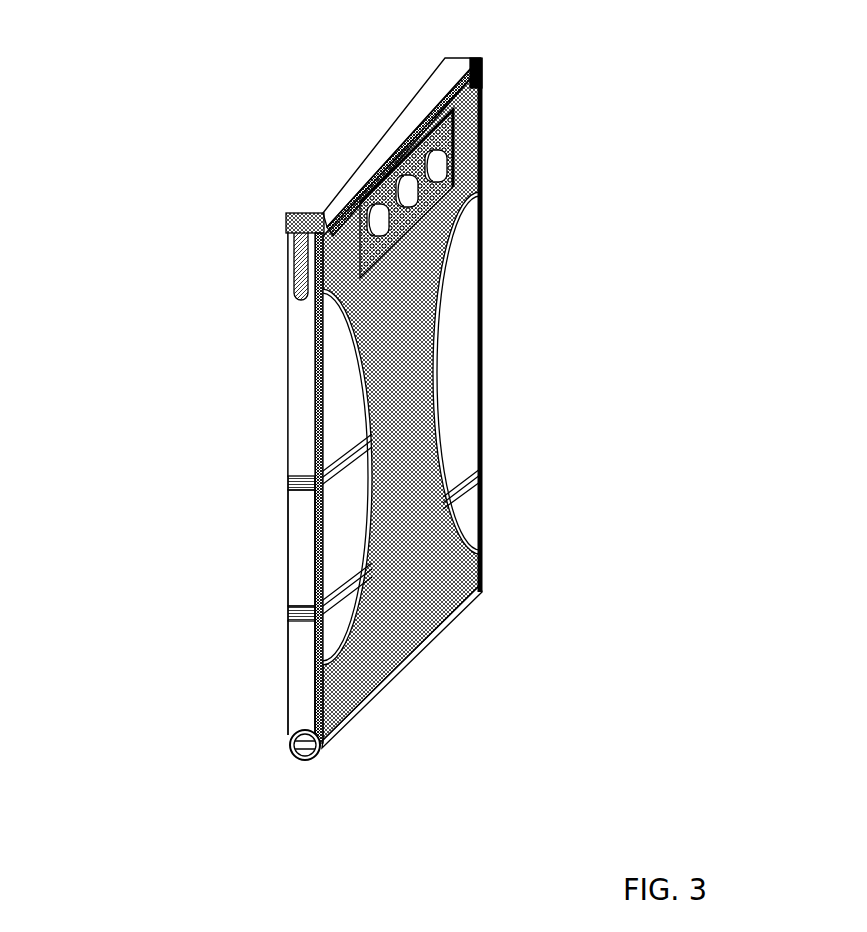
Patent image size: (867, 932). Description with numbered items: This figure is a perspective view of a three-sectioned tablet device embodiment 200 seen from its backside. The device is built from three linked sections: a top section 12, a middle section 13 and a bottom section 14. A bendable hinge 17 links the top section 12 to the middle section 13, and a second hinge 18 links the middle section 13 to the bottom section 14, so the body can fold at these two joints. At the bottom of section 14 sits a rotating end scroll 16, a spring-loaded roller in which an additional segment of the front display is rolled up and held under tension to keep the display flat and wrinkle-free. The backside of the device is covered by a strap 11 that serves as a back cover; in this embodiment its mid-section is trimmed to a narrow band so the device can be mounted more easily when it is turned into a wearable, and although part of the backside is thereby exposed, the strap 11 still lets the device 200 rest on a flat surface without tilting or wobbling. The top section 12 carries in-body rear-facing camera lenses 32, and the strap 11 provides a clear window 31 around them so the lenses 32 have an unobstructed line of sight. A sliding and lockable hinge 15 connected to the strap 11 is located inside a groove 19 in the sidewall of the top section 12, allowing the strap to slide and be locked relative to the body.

The tablet device embodiment 200 is at (127, 128).
The strap 11 is at (494, 172).
The top section 12 is at (287, 373).
The middle section 13 is at (290, 530).
The bottom section 14 is at (288, 700).
The sliding and lockable hinge 15 is at (465, 55).
The rotating end scroll 16 is at (317, 753).
The bendable hinge 17 is at (290, 483).
The hinge 18 is at (290, 617).
The groove 19 is at (293, 272).
The clear window 31 is at (468, 133).
The rear facing camera lenses 32 is at (455, 212).